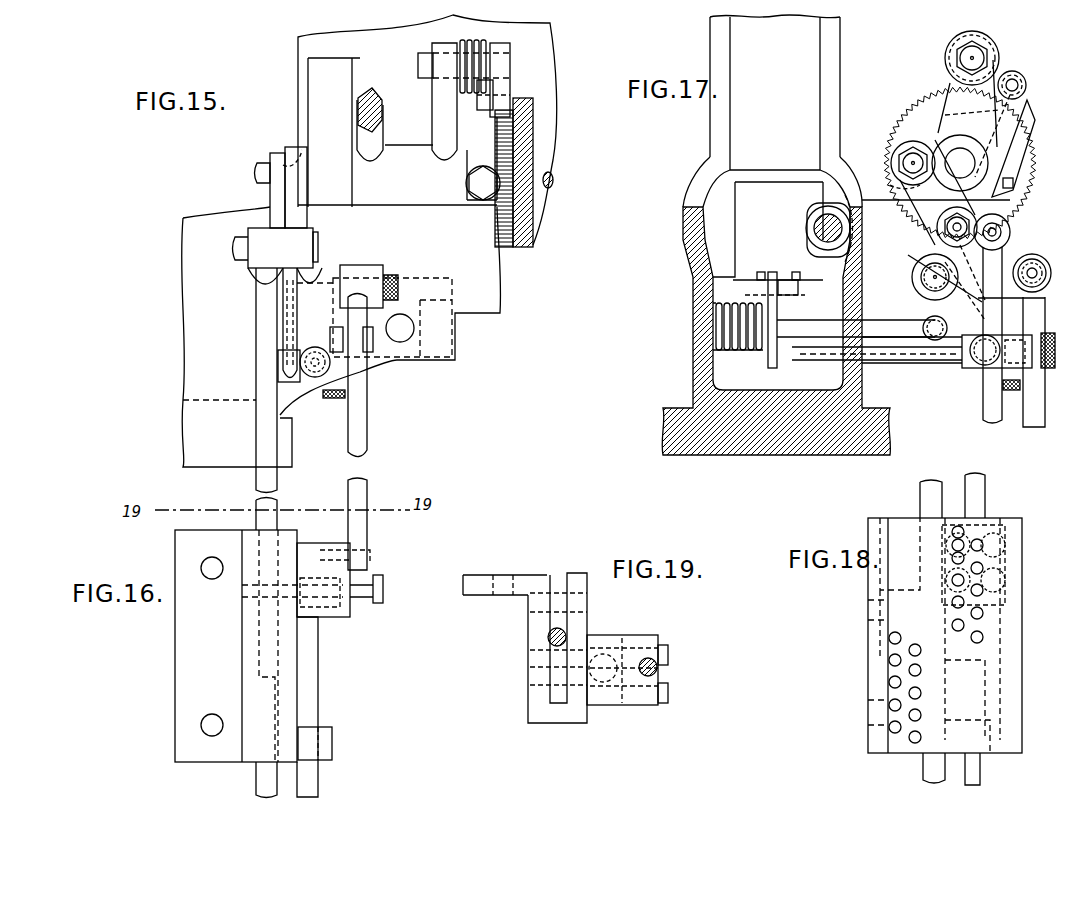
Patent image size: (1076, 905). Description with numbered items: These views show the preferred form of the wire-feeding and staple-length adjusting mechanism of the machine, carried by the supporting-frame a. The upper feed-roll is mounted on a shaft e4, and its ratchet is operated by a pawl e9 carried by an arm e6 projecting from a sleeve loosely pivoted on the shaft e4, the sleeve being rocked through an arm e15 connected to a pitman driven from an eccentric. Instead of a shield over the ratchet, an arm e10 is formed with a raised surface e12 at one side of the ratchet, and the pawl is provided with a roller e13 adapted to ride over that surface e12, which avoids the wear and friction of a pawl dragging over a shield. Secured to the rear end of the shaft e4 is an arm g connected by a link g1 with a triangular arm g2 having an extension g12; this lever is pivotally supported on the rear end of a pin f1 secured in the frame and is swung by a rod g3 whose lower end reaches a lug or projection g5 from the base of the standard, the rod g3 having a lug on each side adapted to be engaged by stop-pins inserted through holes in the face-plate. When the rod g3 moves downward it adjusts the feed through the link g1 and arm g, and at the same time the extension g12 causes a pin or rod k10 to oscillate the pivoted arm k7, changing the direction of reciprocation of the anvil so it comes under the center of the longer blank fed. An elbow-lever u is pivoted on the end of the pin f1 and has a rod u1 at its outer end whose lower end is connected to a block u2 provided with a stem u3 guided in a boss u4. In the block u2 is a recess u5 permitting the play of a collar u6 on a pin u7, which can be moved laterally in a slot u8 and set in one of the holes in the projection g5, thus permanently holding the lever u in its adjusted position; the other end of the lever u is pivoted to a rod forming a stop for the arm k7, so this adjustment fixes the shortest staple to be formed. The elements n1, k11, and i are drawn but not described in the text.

In FIG. 15, the supporting-frame a is at (478, 308).
In FIG. 17, the supporting-frame a is at (712, 140).
In FIG. 15, the shaft e4 is at (405, 145).
In FIG. 17, the shaft e4 is at (960, 163).
In FIG. 15, the arm e6 is at (447, 48).
In FIG. 17, the arm e6 is at (969, 103).
In FIG. 15, the pawl e9 is at (503, 58).
In FIG. 17, the pawl e9 is at (992, 53).
In FIG. 17, the arm e10 is at (1022, 98).
In FIG. 15, the raised surface e12 is at (480, 124).
In FIG. 17, the raised surface e12 is at (1020, 120).
In FIG. 15, the roller e13 is at (483, 93).
In FIG. 17, the roller e13 is at (1014, 72).
In FIG. 15, the arm e15 is at (373, 98).
In FIG. 17, the arm e15 is at (910, 110).
In FIG. 15, the arm g is at (293, 160).
In FIG. 17, the arm g is at (905, 145).
In FIG. 15, the link g1 is at (272, 165).
In FIG. 17, the link g1 is at (912, 190).
In FIG. 17, the triangular arm g2 is at (1012, 240).
In FIG. 15, the rod g3 is at (256, 346).
In FIG. 16, the rod g3 is at (262, 508).
In FIG. 17, the rod g3 is at (986, 412).
In FIG. 18, the rod g3 is at (928, 498).
In FIG. 19, the rod g3 is at (540, 633).
In FIG. 16, the lug or projection g5 is at (252, 648).
In FIG. 18, the lug or projection g5 is at (945, 635).
In FIG. 19, the lug or projection g5 is at (572, 722).
In FIG. 15, the extension g12 is at (280, 326).
In FIG. 17, the extension g12 is at (946, 292).
In FIG. 17, the pin f1 is at (912, 278).
In FIG. 17, the shaft n1 is at (813, 228).
In FIG. 17, the arm k7 is at (778, 320).
In FIG. 17, the pin or rod k10 is at (921, 358).
In FIG. 17, the spring k11 is at (745, 350).
In FIG. 17, the pin i is at (823, 335).
In FIG. 15, the elbow-lever u is at (369, 286).
In FIG. 17, the elbow-lever u is at (933, 316).
In FIG. 15, the rod u1 is at (366, 432).
In FIG. 16, the rod u1 is at (370, 490).
In FIG. 17, the rod u1 is at (1030, 413).
In FIG. 18, the rod u1 is at (985, 490).
In FIG. 19, the rod u1 is at (670, 673).
In FIG. 16, the block u2 is at (330, 550).
In FIG. 19, the block u2 is at (615, 640).
In FIG. 16, the stem u3 is at (319, 693).
In FIG. 17, the stem u3 is at (958, 322).
In FIG. 16, the boss u4 is at (333, 748).
In FIG. 16, the recess u5 is at (340, 607).
In FIG. 16, the collar u6 is at (302, 607).
In FIG. 16, the pin u7 is at (384, 590).
In FIG. 18, the slot u8 is at (1016, 572).